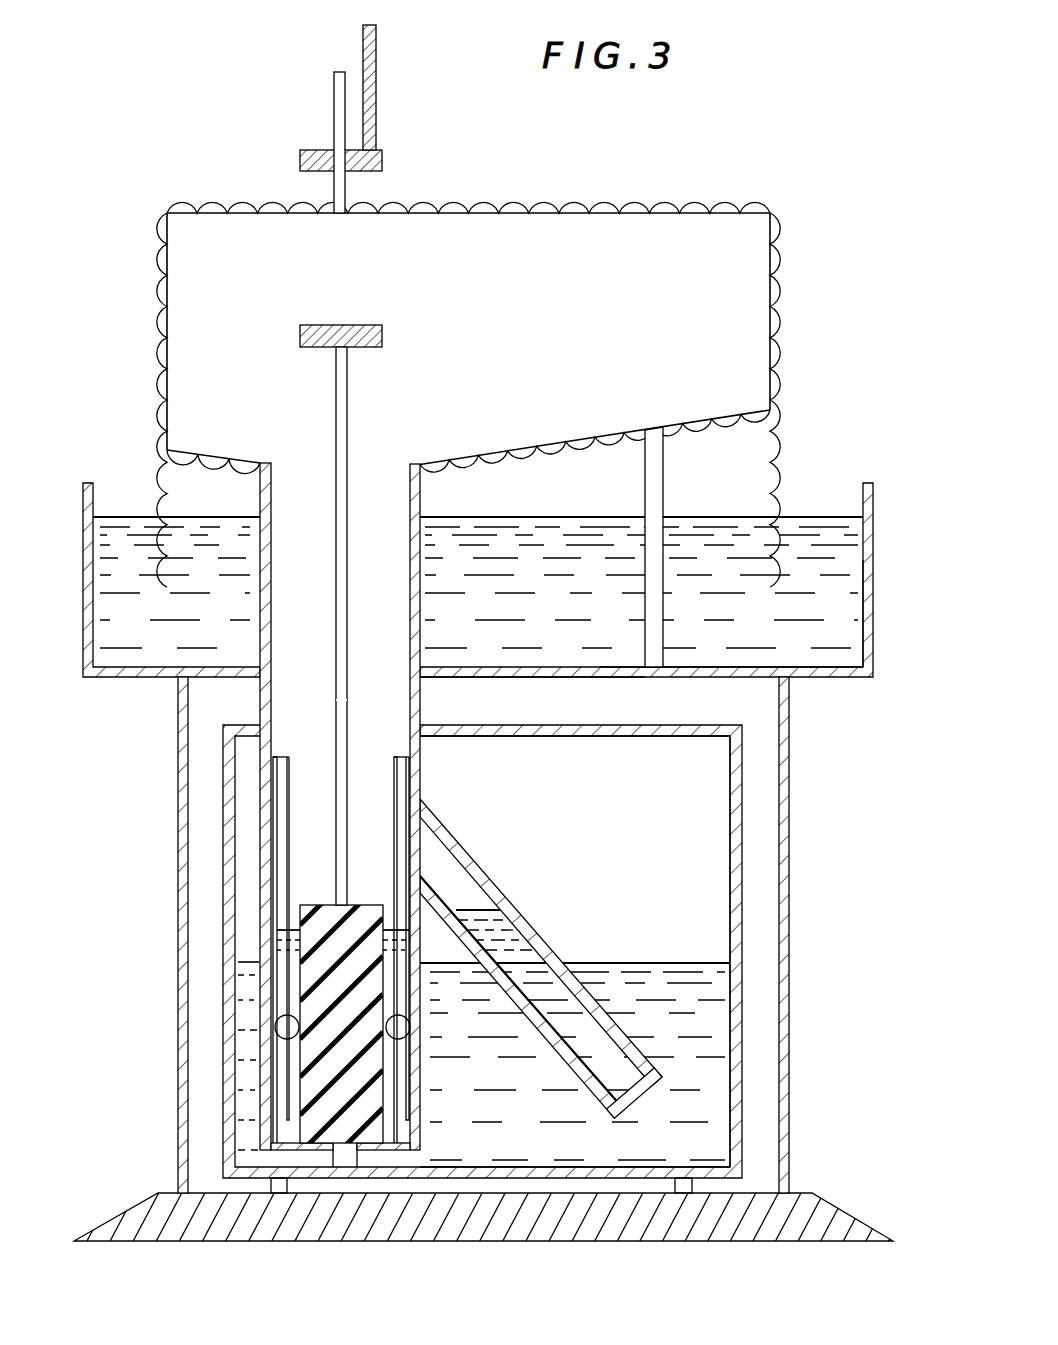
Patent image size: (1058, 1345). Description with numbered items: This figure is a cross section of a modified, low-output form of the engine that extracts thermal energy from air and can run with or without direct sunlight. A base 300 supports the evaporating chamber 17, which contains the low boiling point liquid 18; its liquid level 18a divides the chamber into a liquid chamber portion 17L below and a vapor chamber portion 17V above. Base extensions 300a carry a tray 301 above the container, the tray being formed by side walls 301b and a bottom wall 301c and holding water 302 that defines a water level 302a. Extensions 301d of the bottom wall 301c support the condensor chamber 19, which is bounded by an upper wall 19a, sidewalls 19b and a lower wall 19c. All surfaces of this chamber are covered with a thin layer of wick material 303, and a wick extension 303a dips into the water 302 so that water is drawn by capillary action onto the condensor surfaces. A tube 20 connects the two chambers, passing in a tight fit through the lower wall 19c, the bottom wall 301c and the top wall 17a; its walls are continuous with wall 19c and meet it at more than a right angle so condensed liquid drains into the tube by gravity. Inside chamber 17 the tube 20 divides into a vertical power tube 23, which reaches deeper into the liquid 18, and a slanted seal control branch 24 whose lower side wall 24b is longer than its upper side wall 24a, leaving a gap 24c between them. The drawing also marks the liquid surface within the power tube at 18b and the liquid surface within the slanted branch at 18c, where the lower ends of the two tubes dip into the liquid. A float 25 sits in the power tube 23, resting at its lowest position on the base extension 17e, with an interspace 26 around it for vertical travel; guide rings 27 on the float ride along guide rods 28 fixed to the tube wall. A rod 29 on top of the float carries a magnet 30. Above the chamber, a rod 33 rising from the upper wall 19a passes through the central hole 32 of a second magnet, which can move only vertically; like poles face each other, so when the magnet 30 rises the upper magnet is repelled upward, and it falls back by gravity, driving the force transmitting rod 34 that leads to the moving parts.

The evaporating chamber 17 is at (526, 1002).
The top wall of container 17a is at (567, 737).
The vapor chamber portion 17V is at (601, 814).
The liquid chamber portion 17L is at (562, 1118).
The base extension of lower wall 17e is at (350, 1152).
The low boiling point liquid 18 is at (533, 1019).
The liquid level 18a is at (629, 962).
The liquid level in sleeve 18b is at (291, 926).
The liquid level in duct 18c is at (478, 906).
The condensor chamber 19 is at (468, 339).
The upper wall 19a is at (430, 214).
The sidewalls 19b is at (168, 322).
The lower wall 19c is at (557, 438).
The tube 20 is at (366, 810).
The power tube 23 is at (386, 863).
The seal control tube branch 24 is at (541, 978).
The upper side wall 24a is at (486, 874).
The lower side wall 24b is at (465, 924).
The gap 24c is at (650, 1090).
The float 25 is at (356, 997).
The interspace 26 is at (405, 1142).
The guide rings 27 is at (280, 1027).
The guide rods 28 is at (303, 938).
The rod 29 is at (336, 672).
The magnet 30 is at (374, 347).
The central hole 32 is at (322, 162).
The rod 33 is at (334, 108).
The force transmitting rod 34 is at (371, 76).
The base 300 is at (524, 1228).
The base extensions 300a is at (789, 905).
The tray 301 is at (509, 595).
The side walls 301b is at (873, 627).
The bottom wall 301c is at (582, 678).
The extensions 301d is at (645, 476).
The water 302 is at (478, 569).
The water level 302a is at (690, 517).
The wick material 303 is at (547, 207).
The wick extension 303a is at (785, 505).